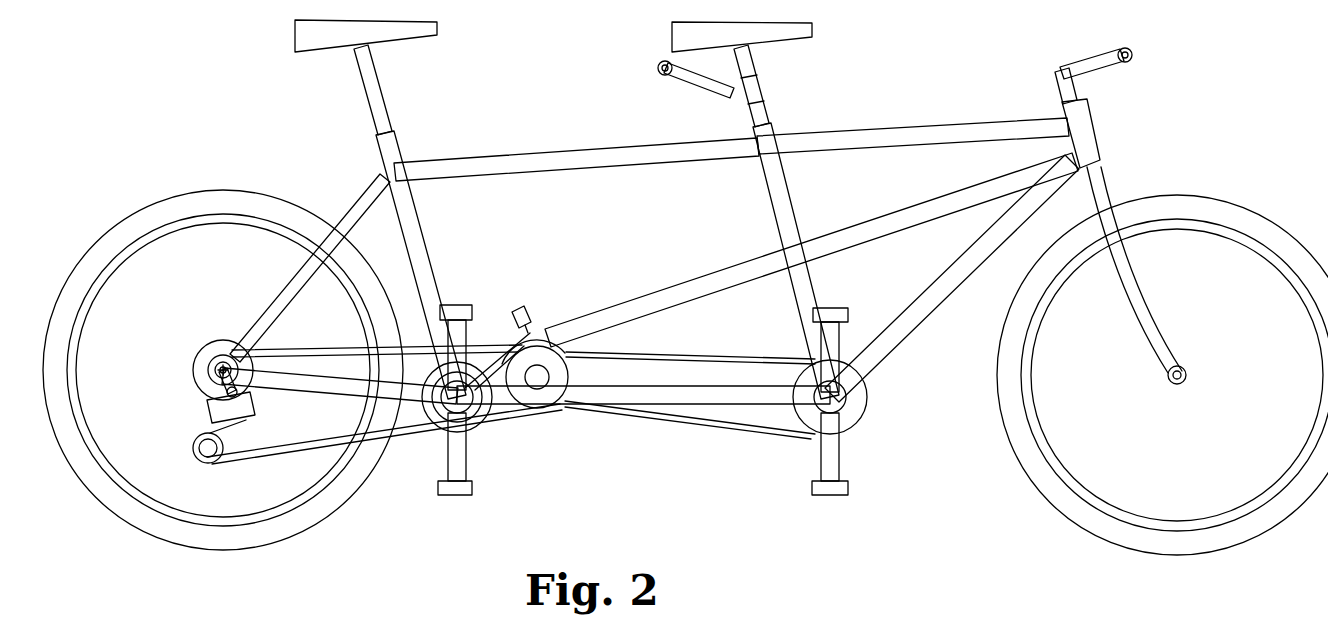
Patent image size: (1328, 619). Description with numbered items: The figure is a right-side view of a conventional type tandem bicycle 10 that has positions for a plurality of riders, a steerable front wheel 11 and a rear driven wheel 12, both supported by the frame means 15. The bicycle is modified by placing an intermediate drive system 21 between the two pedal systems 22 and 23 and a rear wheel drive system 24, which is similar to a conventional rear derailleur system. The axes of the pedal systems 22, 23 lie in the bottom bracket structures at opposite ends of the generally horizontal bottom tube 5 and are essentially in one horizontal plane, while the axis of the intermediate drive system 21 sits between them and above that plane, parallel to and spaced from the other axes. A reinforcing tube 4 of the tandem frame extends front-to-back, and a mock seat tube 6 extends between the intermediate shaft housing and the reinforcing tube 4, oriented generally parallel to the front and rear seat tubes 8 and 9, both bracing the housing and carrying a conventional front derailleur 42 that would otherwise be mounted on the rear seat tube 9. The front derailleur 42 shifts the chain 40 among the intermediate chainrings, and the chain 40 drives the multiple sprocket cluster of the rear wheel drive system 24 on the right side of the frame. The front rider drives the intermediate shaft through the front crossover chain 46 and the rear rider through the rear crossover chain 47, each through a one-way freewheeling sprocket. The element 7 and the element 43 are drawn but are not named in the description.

The tandem bicycle 10 is at (335, 159).
The top tube 15 is at (575, 162).
The rear seat tube 9 is at (418, 238).
The front seat tube 8 is at (797, 306).
The diagonal frame tube 4 is at (684, 290).
The bottom tube 5 is at (650, 395).
The chain stay 7 is at (396, 383).
The rear wheel 12 is at (347, 487).
The front wheel 11 is at (1032, 452).
The rear crank assembly 23 is at (460, 470).
The front crank assembly 22 is at (835, 468).
The rear chainring 47 is at (488, 427).
The intermediate sprocket 21 is at (543, 380).
The timing chain 42 is at (524, 338).
The freewheel sensor 6 is at (524, 313).
The freewheel 40 is at (484, 340).
The rear drive chain 24 is at (320, 352).
The front drive chain 46 is at (720, 412).
The chain tensioner 43 is at (238, 417).